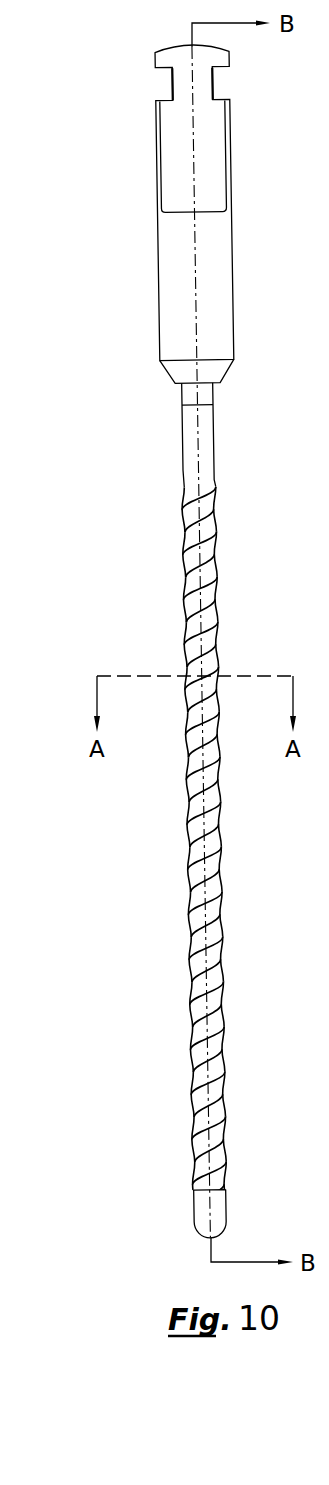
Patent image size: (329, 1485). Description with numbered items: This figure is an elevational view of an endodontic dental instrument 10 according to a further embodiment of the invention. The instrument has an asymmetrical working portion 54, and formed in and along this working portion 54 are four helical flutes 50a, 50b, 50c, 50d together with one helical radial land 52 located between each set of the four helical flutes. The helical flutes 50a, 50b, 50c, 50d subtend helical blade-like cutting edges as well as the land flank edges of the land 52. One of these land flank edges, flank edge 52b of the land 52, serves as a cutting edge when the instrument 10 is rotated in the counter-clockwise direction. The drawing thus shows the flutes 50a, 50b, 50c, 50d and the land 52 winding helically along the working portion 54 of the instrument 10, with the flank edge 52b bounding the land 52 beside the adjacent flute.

The endodontic instrument 10 is at (113, 48).
The helical flute 50a is at (203, 779).
The helical flute 50b is at (203, 824).
The helical flute 50c is at (204, 869).
The helical flute 50d is at (218, 614).
The helical radial land 52 is at (204, 847).
The land flank edge 52b is at (204, 847).
The asymmetrical working portion 54 is at (204, 847).